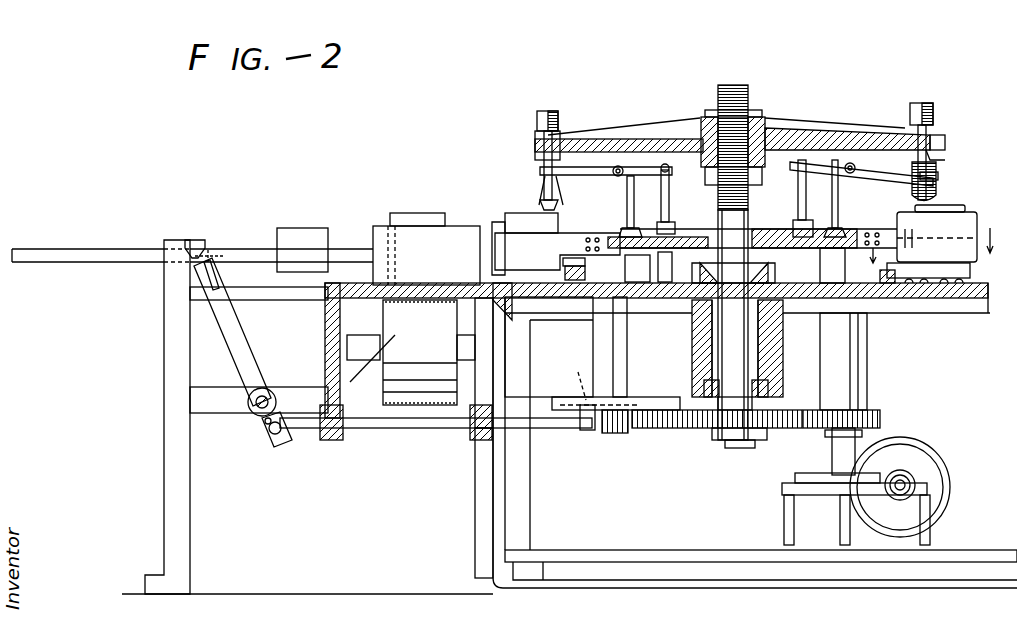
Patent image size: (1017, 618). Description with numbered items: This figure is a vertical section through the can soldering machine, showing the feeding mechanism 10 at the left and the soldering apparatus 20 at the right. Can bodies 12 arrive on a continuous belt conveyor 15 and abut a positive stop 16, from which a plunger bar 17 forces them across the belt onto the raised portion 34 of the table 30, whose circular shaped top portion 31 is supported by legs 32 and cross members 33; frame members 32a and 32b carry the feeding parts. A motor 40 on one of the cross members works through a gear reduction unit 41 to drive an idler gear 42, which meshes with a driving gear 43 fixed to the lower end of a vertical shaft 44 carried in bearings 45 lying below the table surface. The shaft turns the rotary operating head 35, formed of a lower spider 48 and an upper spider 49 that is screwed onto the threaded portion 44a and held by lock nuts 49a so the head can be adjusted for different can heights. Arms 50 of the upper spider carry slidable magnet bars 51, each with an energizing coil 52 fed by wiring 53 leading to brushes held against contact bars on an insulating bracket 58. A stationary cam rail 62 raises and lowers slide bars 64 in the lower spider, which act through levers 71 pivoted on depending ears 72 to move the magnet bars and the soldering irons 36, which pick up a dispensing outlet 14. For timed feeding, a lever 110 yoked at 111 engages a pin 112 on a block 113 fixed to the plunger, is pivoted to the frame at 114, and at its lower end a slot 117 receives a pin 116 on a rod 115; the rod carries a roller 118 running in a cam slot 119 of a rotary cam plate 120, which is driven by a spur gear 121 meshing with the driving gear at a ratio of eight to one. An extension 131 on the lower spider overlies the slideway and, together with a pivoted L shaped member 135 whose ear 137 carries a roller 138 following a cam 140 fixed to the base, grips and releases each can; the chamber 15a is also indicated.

The feeding mechanism 10 is at (356, 233).
The can body 12 is at (413, 213).
The dispensing outlet 14 is at (540, 207).
The continuous belt conveyor 15 is at (412, 300).
The housing chamber 15a is at (366, 366).
The positive stop 16 is at (426, 255).
The plunger bar 17 is at (294, 244).
The soldering apparatus 20 is at (690, 138).
The table 30 is at (890, 300).
The circular shaped top portion 31 is at (864, 342).
The legs 32 is at (530, 491).
The frame member 32a is at (210, 395).
The frame member 32b is at (307, 511).
The cross members 33 is at (660, 550).
The raised portion 34 is at (935, 284).
The rotary operating head 35 is at (648, 136).
The soldering iron 36 is at (540, 190).
The motor 40 is at (924, 455).
The gear reduction unit 41 is at (802, 480).
The idler gear 42 is at (870, 410).
The driving gear 43 is at (700, 430).
The vertical shaft 44 is at (737, 356).
The threaded portion 44a is at (735, 88).
The bearings 45 is at (690, 300).
The spider 48 is at (615, 237).
The spider 49 is at (812, 130).
The lock nuts 49a is at (758, 117).
The outwardly extending arms 50 is at (945, 142).
The magnet bar 51 is at (946, 152).
The energizing coil 52 is at (540, 116).
The wiring 53 is at (876, 130).
The bracket 58 is at (637, 268).
The cam rail 62 is at (672, 262).
The slide bar 64 is at (806, 212).
The lever 71 is at (594, 178).
The depending ears 72 is at (612, 168).
The lever 110 is at (256, 350).
The yoke 111 is at (216, 268).
The pin 112 is at (206, 240).
The block 113 is at (188, 240).
The pivot 114 is at (268, 394).
The rod 115 is at (380, 430).
The pin 116 is at (268, 442).
The slot 117 is at (262, 424).
The roller 118 is at (586, 428).
The cam slot 119 is at (581, 375).
The rotary cam plate 120 is at (562, 397).
The spur gear 121 is at (607, 349).
The extension 131 is at (557, 251).
The L shaped member 135 is at (497, 224).
The ear 137 is at (586, 264).
The roller 138 is at (585, 275).
The cam 140 is at (549, 423).